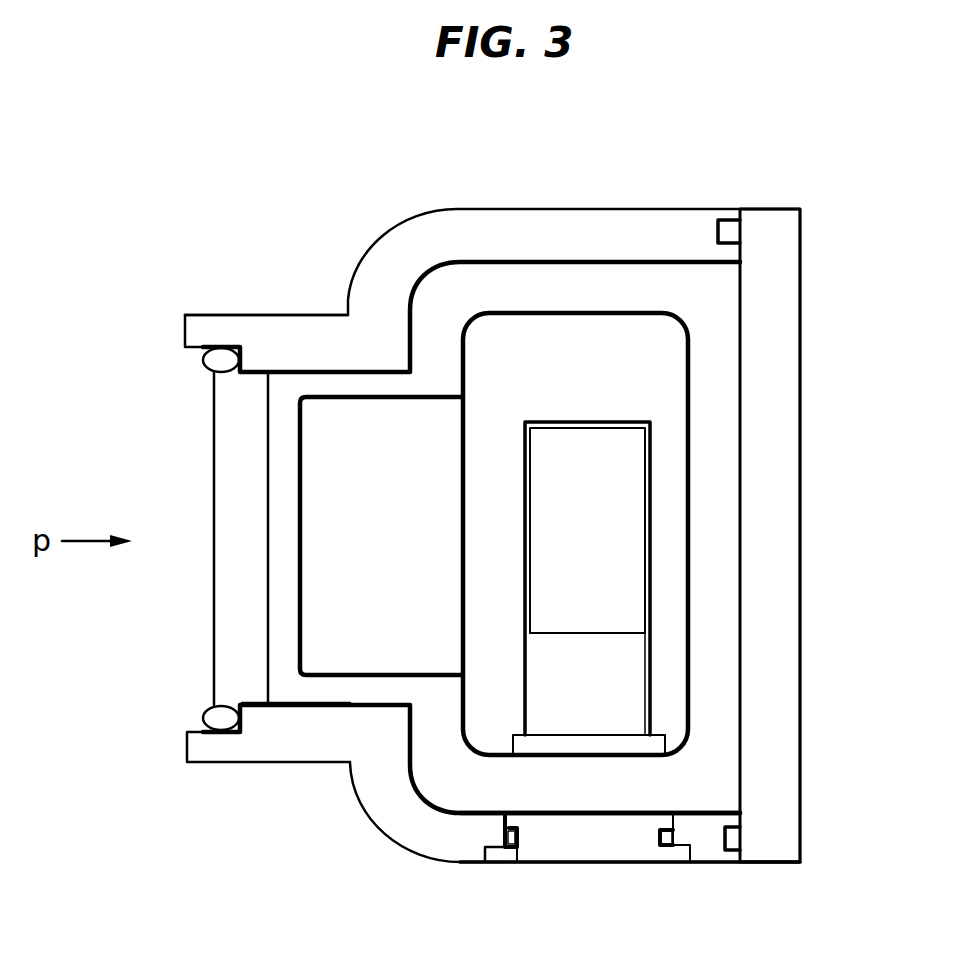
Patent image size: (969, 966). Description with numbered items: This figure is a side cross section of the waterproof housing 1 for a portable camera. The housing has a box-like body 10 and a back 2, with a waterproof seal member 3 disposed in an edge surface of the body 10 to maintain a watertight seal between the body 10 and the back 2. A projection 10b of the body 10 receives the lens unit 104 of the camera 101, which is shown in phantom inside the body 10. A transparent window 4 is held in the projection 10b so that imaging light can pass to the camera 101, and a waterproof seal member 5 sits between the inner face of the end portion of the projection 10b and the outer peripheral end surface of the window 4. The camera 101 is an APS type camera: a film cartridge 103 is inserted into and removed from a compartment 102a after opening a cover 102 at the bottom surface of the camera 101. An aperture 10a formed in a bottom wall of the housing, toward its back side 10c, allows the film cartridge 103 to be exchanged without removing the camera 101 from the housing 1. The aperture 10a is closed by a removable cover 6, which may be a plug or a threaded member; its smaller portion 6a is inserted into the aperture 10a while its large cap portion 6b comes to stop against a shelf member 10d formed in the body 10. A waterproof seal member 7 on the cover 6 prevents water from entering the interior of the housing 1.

The waterproof housing 1 is at (473, 204).
The back 2 is at (773, 262).
The waterproof seal member 3 is at (726, 225).
The transparent window 4 is at (222, 432).
The waterproof seal member 5 is at (213, 357).
The cover 6 is at (563, 838).
The smaller portion 6a is at (668, 818).
The large portion 6b is at (683, 852).
The waterproof seal member 7 is at (515, 845).
The body 10 is at (597, 230).
The aperture 10a is at (505, 815).
The projection 10b is at (285, 333).
The back side 10c is at (705, 866).
The shelf member 10d is at (490, 862).
The camera 101 is at (658, 360).
The cover 102 is at (640, 745).
The compartment 102a is at (640, 672).
The film cartridge 103 is at (620, 496).
The lens unit 104 is at (326, 650).